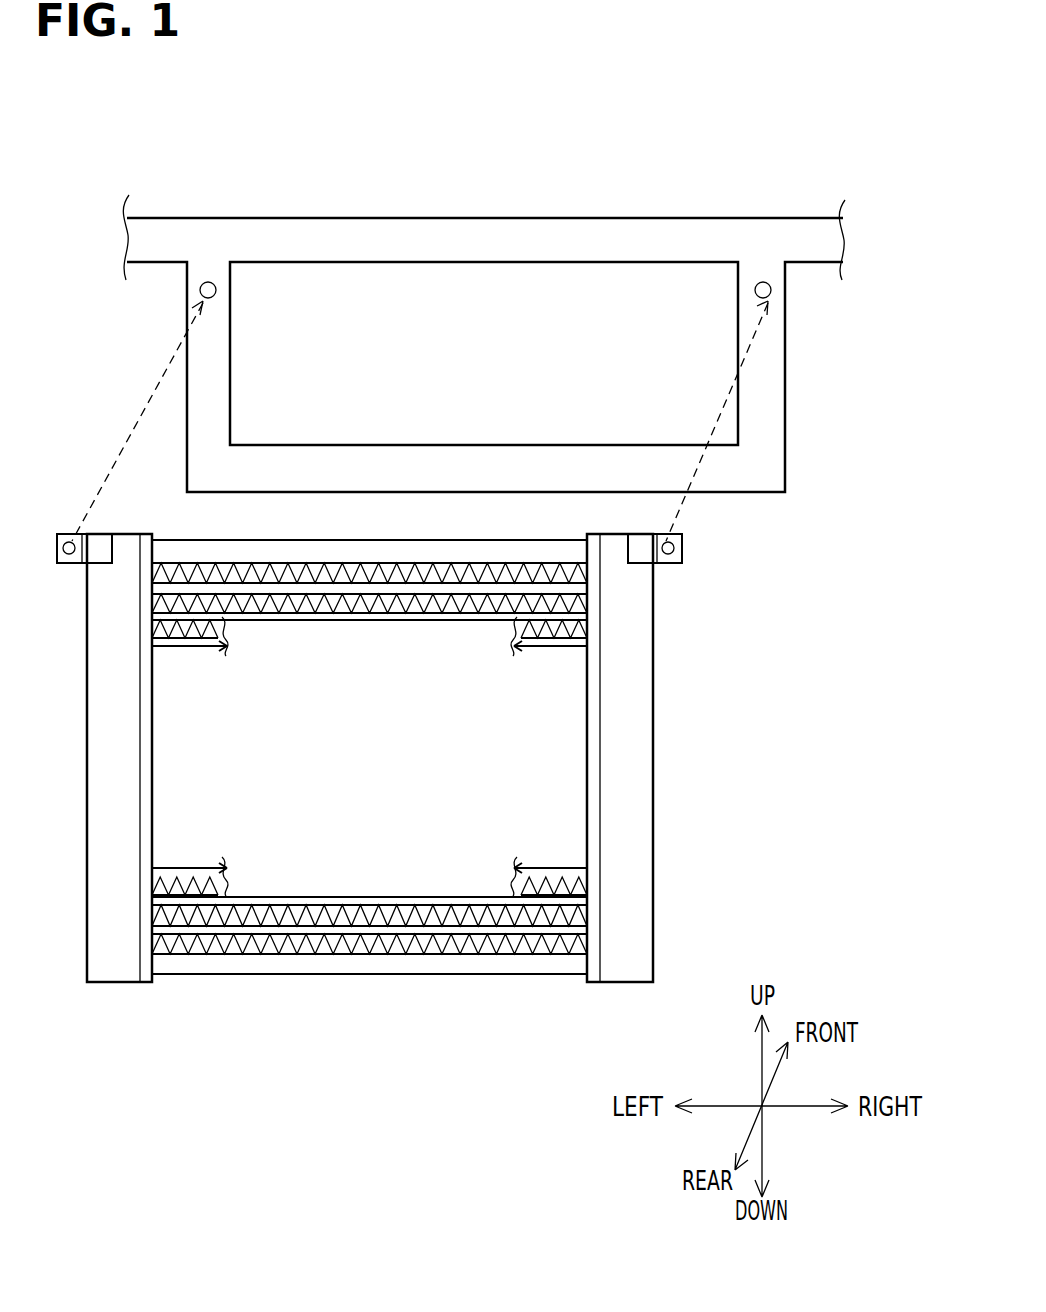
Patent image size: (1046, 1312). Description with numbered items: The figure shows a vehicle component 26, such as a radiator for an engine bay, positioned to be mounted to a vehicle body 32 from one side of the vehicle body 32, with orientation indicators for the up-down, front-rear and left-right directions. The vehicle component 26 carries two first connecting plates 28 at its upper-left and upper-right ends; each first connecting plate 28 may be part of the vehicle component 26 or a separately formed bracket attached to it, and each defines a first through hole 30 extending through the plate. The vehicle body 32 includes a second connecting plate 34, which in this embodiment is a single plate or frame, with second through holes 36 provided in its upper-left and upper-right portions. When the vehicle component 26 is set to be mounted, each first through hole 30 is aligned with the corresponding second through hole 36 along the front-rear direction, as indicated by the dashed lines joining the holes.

The vehicle component 26 is at (692, 733).
The first connecting plate 28 is at (57, 549).
The first through hole 30 is at (70, 556).
The vehicle body 32 is at (812, 428).
The second connecting plate 34 is at (210, 347).
The second through hole 36 is at (200, 292).